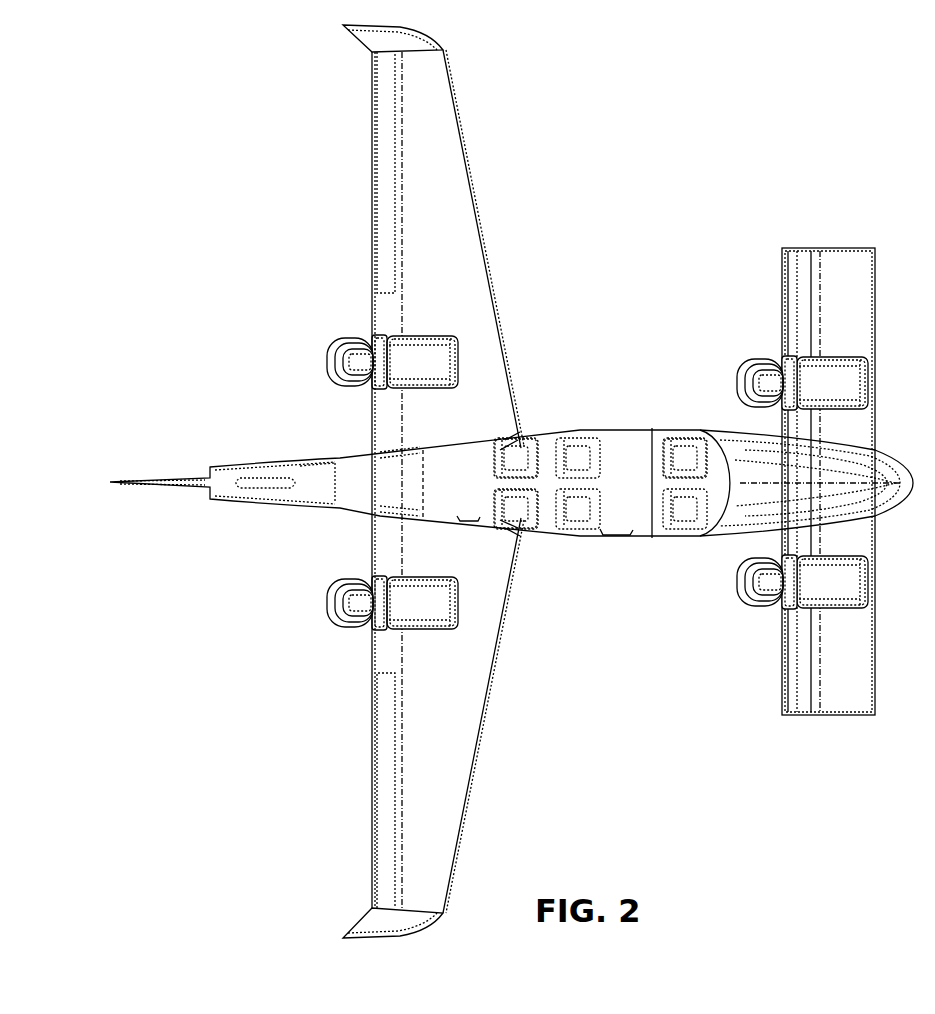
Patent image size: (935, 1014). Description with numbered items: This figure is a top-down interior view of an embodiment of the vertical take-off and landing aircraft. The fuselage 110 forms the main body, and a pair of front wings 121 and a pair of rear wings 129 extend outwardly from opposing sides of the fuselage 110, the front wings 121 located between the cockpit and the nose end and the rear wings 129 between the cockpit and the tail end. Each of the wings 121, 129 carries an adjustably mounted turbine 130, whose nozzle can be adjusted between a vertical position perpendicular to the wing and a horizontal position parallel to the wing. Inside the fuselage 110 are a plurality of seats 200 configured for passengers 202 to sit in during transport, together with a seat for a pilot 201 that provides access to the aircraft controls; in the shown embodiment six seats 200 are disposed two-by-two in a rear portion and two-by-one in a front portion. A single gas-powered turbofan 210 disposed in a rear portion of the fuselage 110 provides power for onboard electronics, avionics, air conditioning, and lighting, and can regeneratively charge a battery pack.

The fuselage 110 is at (633, 427).
The front wings 121 is at (847, 258).
The rear wings 129 is at (452, 193).
The adjustably mounted turbine 130 is at (420, 598).
The seats 200 is at (668, 460).
The pilot 201 is at (580, 637).
The passengers 202 is at (578, 637).
The gas-powered turbofan 210 is at (330, 473).